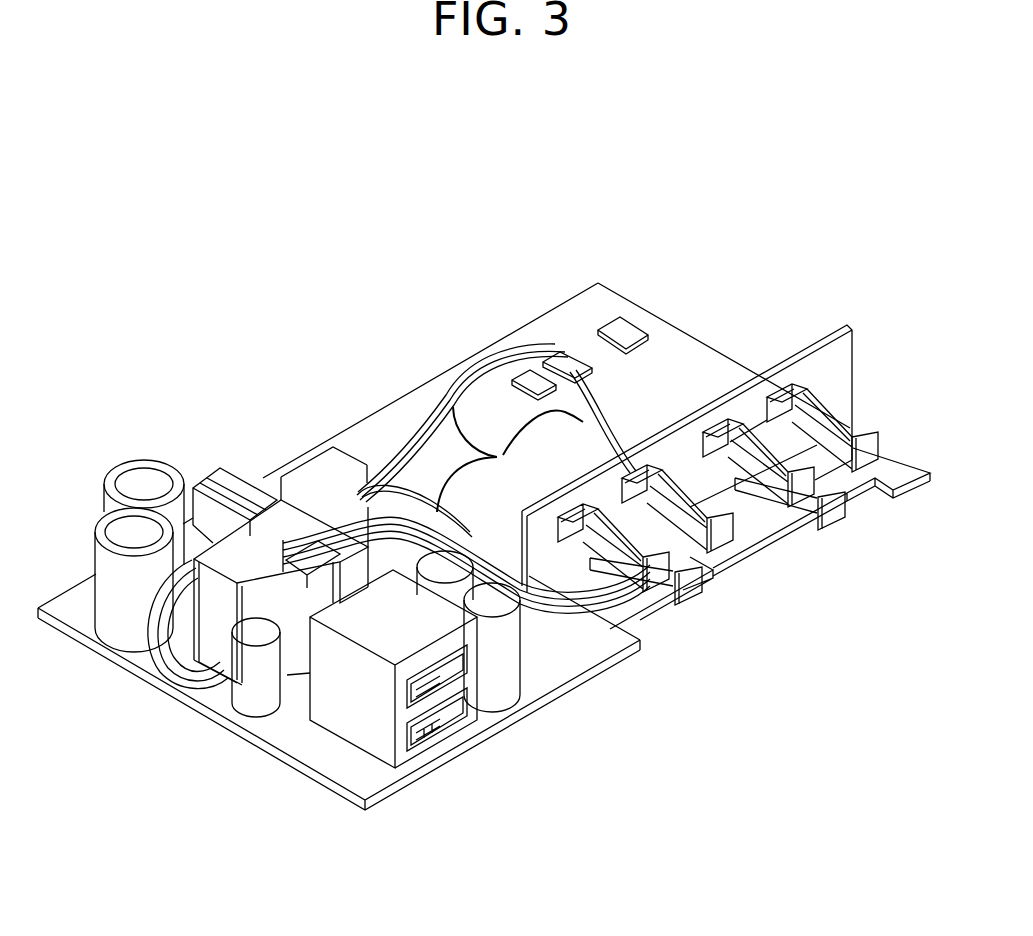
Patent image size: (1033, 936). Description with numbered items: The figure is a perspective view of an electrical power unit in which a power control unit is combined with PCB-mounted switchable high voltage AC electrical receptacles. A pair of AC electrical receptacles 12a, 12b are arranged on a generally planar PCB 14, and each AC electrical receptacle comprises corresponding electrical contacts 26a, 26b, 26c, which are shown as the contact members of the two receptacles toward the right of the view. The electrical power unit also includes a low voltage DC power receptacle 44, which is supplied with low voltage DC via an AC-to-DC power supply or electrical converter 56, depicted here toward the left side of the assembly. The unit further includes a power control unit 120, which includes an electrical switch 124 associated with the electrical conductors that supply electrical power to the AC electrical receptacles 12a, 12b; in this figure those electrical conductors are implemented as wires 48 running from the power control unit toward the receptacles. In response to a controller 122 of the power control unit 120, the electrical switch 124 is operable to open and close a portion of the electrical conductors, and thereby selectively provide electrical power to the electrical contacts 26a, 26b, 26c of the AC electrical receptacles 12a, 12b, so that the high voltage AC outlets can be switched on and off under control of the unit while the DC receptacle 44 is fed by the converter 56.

The PCB 14 is at (530, 318).
The low voltage DC power receptacle 44 is at (471, 797).
The AC-to-DC power supply 56 is at (123, 460).
The power control unit 120 is at (313, 432).
The controller 122 is at (253, 455).
The electrical switch 124 is at (288, 458).
The wires 48 is at (510, 459).
The AC electrical receptacle 12a is at (846, 608).
The AC electrical receptacle 12b is at (693, 684).
The electrical contact 26a is at (718, 540).
The electrical contact 26b is at (667, 592).
The electrical contact 26c is at (697, 603).